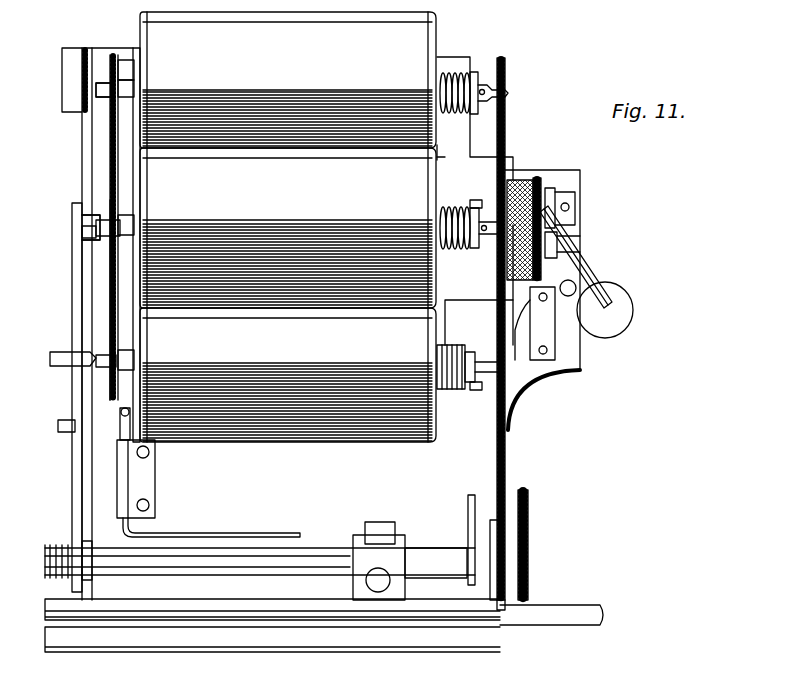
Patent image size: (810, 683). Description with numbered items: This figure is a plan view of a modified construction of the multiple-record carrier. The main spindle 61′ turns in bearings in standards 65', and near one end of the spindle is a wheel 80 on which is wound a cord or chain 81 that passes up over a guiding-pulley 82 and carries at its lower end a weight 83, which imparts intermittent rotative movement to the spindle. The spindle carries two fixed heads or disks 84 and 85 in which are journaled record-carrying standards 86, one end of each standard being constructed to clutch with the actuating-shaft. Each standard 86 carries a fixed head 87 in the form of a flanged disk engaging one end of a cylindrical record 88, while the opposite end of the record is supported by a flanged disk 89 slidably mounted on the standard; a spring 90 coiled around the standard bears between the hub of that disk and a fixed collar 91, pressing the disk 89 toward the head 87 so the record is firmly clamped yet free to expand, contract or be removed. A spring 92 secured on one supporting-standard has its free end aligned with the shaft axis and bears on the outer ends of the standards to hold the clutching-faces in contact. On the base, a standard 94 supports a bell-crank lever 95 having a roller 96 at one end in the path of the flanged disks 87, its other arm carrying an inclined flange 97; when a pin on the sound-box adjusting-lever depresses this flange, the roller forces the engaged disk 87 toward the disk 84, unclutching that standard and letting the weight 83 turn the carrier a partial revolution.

The main spindle 61′ is at (82, 222).
The standards 65' is at (332, 230).
The wheel 80 is at (540, 182).
The cord or chain 81 is at (580, 230).
The guiding-pulley 82 is at (605, 292).
The weight 83 is at (622, 318).
The fixed head or disk 84 is at (530, 394).
The fixed head or disk 85 is at (112, 328).
The record-carrying standard 86 is at (104, 96).
The fixed head 87 is at (142, 68).
The cylindrical record 88 is at (288, 227).
The flanged disk 89 is at (440, 86).
The spring 90 is at (455, 250).
The fixed collar 91 is at (474, 207).
The spring 92 is at (555, 352).
The standard 94 is at (127, 473).
The bell-crank lever 95 is at (125, 530).
The roller 96 is at (120, 418).
The inclined flange 97 is at (190, 535).